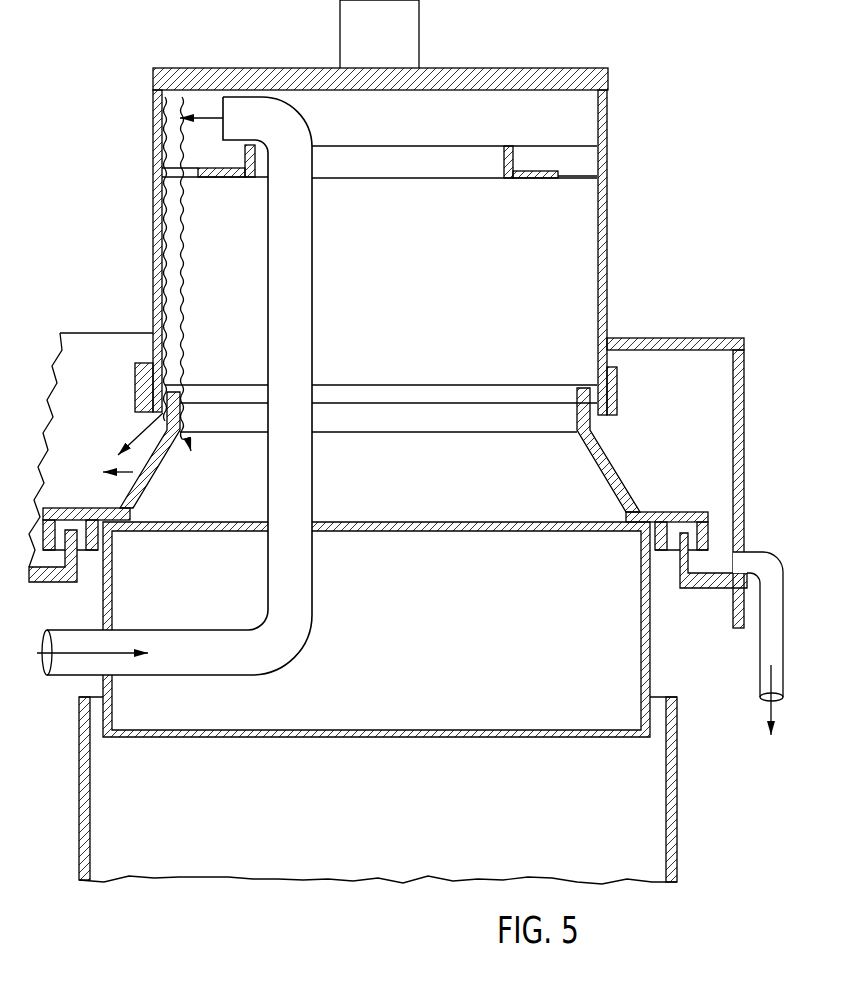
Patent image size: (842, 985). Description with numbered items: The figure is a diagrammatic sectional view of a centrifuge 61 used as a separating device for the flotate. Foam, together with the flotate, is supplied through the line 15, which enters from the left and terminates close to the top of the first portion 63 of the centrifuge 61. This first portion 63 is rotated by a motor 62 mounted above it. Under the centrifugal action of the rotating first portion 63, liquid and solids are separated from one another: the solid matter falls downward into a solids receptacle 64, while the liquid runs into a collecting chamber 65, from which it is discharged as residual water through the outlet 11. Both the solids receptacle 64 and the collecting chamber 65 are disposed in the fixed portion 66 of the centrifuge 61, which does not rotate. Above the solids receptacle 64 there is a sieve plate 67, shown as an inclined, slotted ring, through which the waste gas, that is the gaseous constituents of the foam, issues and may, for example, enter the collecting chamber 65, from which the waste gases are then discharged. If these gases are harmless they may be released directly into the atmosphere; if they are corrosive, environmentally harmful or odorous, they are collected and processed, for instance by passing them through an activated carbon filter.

The outlet pipe 11 is at (770, 705).
The line 15 is at (58, 677).
The centrifuge 61 is at (128, 255).
The motor 62 is at (408, 42).
The first portion 63 is at (606, 213).
The solids receptacle 64 is at (88, 822).
The collecting chamber 65 is at (678, 367).
The fixed portion 66 is at (662, 638).
The sieve plate 67 is at (597, 450).